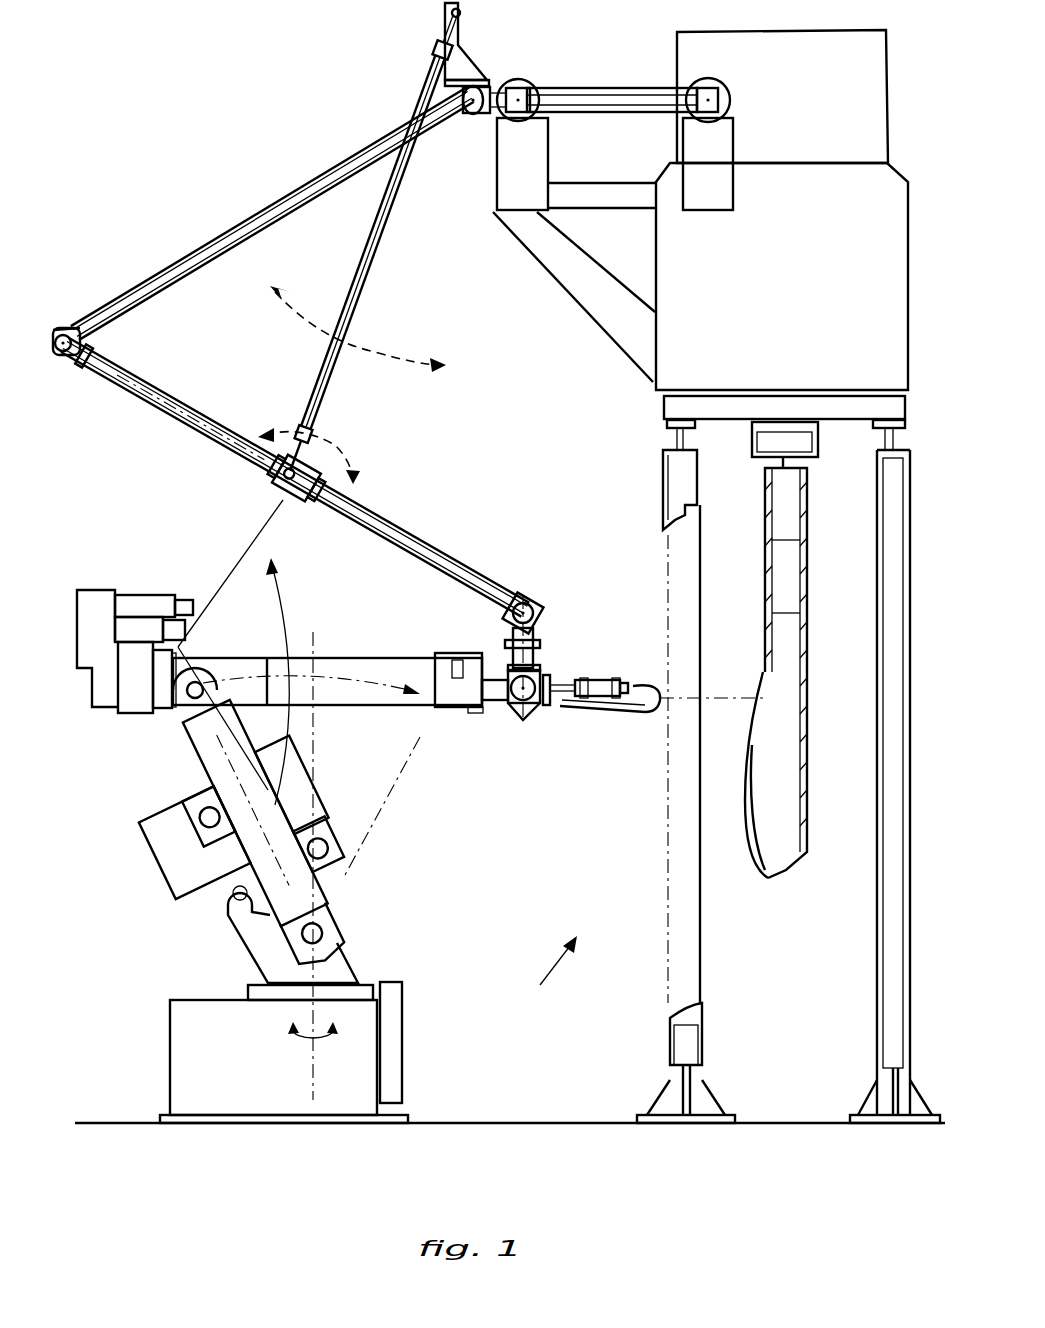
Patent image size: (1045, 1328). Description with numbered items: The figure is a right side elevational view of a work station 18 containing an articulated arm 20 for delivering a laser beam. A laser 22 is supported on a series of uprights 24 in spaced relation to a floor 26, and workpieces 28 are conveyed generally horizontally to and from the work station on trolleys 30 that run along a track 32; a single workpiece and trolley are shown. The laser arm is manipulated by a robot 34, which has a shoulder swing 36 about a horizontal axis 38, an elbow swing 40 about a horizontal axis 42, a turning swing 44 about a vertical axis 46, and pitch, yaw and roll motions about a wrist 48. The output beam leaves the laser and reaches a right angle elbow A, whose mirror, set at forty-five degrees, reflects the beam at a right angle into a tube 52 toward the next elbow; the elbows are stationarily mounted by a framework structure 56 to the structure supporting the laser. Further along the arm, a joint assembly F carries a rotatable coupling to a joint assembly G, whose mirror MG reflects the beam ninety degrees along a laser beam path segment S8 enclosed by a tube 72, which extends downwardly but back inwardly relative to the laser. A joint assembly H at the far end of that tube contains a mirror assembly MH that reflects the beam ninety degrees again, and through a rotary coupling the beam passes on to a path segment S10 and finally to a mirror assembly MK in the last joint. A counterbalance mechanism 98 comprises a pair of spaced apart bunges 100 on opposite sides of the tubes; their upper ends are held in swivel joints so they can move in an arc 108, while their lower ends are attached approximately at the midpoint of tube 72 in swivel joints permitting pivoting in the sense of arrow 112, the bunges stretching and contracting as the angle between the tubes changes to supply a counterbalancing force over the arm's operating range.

The laser 22 is at (903, 68).
The framework structure 56 is at (583, 213).
The tube 52 is at (583, 88).
The right angle elbow A is at (728, 92).
The uprights 24 is at (877, 1033).
The track 32 is at (818, 440).
The trolley 30 is at (808, 475).
The workpiece 28 is at (772, 782).
The floor 26 is at (513, 1125).
The work station 18 is at (546, 974).
The vertical axis 46 is at (318, 1077).
The turning swing 44 is at (300, 1052).
The shoulder swing 36 is at (372, 672).
The elbow swing 40 is at (285, 592).
The horizontal axis 38 is at (325, 935).
The horizontal axis 42 is at (185, 702).
The robot 34 is at (160, 897).
The articulated arm 20 is at (227, 232).
The joint assembly F is at (75, 325).
The joint assembly G is at (55, 354).
The mirror MG is at (72, 360).
The laser beam path segment S8 is at (140, 388).
The tube 72 is at (192, 408).
The bunges 100 is at (388, 230).
The counterbalance mechanism 98 is at (417, 70).
The arc 108 is at (375, 352).
The arrow 112 is at (330, 440).
The joint assembly H is at (525, 600).
The mirror assembly MH is at (540, 628).
The laser beam path segment S10 is at (545, 666).
The mirror assembly MK is at (535, 700).
The wrist 48 is at (478, 713).